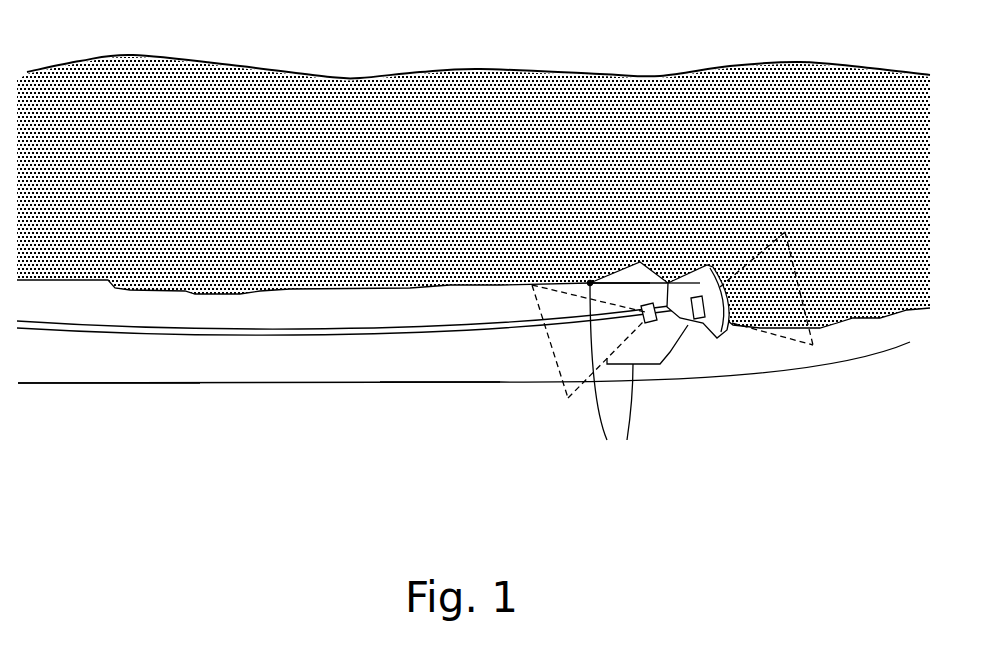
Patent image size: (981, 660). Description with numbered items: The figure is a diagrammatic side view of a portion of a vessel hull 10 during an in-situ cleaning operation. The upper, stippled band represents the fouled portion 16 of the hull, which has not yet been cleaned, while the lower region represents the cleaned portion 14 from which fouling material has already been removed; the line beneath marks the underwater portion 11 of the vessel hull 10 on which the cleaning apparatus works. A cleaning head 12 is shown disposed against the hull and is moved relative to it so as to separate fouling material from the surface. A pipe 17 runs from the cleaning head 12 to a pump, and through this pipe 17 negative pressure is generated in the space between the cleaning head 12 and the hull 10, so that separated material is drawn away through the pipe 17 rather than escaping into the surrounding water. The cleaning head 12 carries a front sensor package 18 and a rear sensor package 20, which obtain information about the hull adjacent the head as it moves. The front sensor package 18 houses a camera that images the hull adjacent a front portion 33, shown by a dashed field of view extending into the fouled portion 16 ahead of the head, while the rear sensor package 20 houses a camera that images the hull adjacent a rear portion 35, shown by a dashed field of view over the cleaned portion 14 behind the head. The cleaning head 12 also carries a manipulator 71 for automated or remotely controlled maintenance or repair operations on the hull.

The vessel hull 10 is at (138, 365).
The underwater portion 11 is at (464, 362).
The cleaning head 12 is at (690, 322).
The cleaned portion 14 is at (428, 367).
The fouled portion 16 is at (506, 78).
The pipe 17 is at (317, 325).
The front sensor package 18 is at (707, 343).
The rear sensor package 20 is at (650, 320).
The front portion 33 is at (815, 338).
The rear portion 35 is at (562, 387).
The manipulator 71 is at (611, 378).